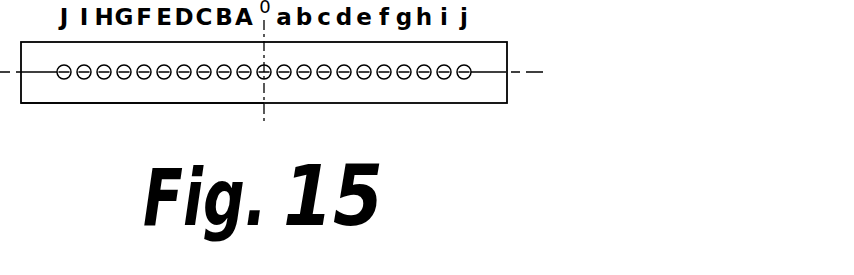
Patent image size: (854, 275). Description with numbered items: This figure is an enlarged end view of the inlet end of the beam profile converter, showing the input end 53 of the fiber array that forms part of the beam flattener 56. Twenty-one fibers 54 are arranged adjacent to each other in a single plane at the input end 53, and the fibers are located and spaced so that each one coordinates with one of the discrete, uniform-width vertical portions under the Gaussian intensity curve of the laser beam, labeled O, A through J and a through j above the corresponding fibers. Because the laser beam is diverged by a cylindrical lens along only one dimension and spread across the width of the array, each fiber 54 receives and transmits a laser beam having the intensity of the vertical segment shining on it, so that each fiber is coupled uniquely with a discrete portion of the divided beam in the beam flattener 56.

The input end 53 is at (509, 56).
The fiber 54 is at (426, 79).
The beam flattener 56 is at (147, 125).